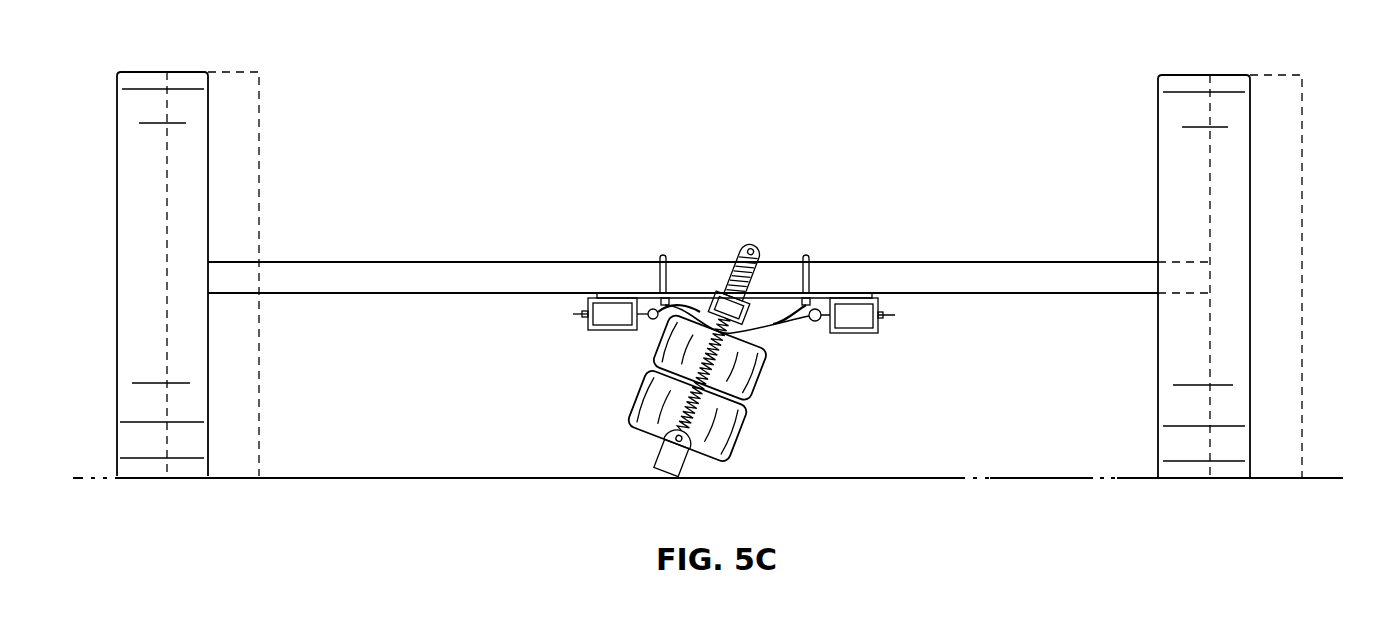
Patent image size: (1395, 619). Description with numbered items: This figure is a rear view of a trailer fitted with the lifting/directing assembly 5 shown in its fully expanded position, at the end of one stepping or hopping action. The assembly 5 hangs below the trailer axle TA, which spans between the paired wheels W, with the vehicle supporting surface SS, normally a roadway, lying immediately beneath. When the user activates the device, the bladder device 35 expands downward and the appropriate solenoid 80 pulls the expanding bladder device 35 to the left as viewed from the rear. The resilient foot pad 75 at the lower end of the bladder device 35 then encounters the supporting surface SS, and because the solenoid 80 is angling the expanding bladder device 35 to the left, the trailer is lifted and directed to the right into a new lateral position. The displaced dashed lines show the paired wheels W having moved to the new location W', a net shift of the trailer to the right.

The lifting/directing assembly 5 is at (700, 378).
The bladder device 35 is at (752, 385).
The resilient foot pad 75 is at (647, 472).
The solenoid 80 is at (616, 320).
The paired wheels W is at (683, 250).
The new wheel location W' is at (792, 269).
The trailer axle TA is at (1071, 285).
The vehicle supporting surface SS is at (903, 478).